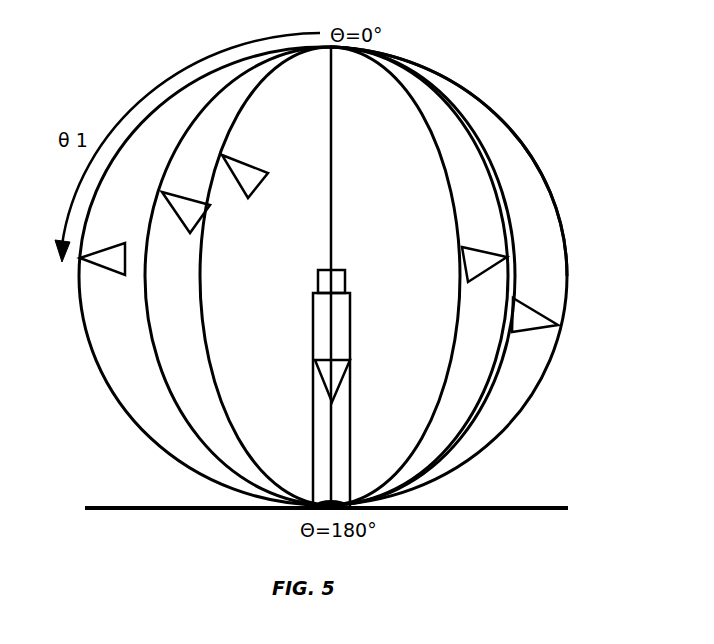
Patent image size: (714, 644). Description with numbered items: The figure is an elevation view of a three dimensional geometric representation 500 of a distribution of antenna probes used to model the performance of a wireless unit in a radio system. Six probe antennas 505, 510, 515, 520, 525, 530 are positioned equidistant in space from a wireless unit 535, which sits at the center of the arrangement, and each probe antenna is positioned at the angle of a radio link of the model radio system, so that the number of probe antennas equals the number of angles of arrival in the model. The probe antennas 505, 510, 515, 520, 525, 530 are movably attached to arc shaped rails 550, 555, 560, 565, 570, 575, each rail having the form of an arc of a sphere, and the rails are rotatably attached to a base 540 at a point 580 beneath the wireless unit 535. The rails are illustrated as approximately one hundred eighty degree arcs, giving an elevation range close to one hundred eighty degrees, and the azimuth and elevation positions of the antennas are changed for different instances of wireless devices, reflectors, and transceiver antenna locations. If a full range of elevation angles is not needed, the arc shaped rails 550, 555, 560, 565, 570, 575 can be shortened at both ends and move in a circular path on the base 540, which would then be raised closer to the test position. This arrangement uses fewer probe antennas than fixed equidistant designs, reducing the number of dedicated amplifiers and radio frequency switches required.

The three dimensional geometric representation 500 is at (86, 51).
The probe antenna 505 is at (88, 268).
The probe antenna 510 is at (203, 228).
The probe antenna 515 is at (245, 159).
The probe antenna 520 is at (352, 383).
The probe antenna 525 is at (462, 247).
The probe antenna 530 is at (543, 312).
The wireless unit 535 is at (343, 270).
The base 540 is at (505, 505).
The arc shaped rail 550 is at (103, 383).
The arc shaped rail 555 is at (147, 298).
The arc shaped rail 560 is at (202, 315).
The arc shaped rail 565 is at (333, 213).
The arc shaped rail 570 is at (477, 143).
The arc shaped rail 575 is at (525, 148).
The point 580 is at (325, 500).